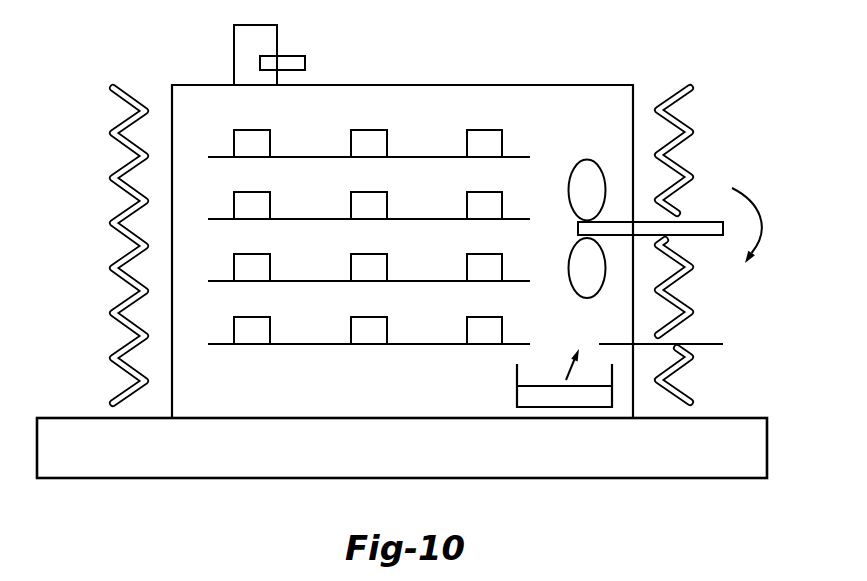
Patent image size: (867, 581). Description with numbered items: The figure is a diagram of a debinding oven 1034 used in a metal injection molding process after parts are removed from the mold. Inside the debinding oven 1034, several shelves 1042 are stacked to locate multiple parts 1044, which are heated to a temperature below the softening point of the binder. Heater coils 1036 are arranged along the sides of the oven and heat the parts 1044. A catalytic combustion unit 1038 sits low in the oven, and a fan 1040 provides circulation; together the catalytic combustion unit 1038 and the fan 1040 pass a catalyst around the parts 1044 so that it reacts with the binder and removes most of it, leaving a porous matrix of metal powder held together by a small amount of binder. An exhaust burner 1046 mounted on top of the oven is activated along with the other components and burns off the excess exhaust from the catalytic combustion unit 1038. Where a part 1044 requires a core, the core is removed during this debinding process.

The debinding oven 1034 is at (641, 55).
The heater coils 1036 is at (122, 152).
The catalytic combustion unit 1038 is at (612, 370).
The fan 1040 is at (587, 188).
The shelves 1042 is at (429, 157).
The parts 1044 is at (242, 145).
The exhaust burner 1046 is at (278, 41).